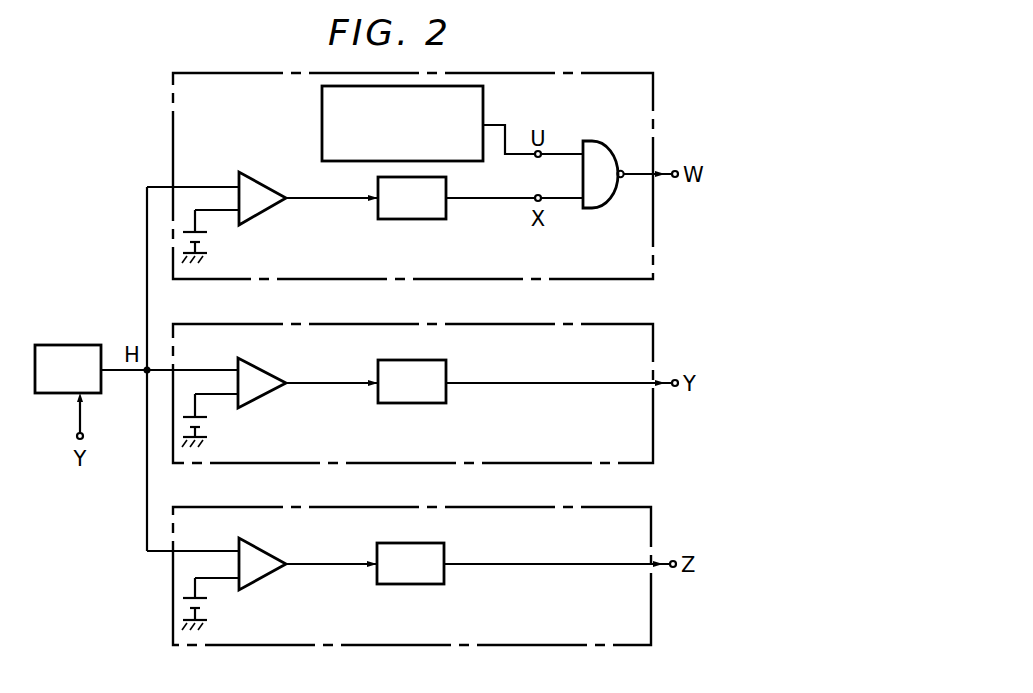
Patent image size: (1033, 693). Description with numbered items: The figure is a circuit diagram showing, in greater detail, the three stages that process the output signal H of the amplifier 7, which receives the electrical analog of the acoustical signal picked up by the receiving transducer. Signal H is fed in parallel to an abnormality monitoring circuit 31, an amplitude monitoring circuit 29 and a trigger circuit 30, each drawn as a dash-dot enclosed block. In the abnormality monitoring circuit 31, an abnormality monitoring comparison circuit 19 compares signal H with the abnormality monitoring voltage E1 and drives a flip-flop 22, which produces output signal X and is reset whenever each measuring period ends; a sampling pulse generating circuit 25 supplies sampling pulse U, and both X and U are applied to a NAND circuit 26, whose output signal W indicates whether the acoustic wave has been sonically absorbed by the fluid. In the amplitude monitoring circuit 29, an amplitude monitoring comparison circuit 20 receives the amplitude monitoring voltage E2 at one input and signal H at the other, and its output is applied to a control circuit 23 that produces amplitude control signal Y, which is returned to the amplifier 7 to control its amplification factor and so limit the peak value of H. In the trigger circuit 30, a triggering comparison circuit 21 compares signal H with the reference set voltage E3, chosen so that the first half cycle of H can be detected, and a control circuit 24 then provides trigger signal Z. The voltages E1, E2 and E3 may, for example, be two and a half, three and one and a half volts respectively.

The amplifier 7 is at (72, 345).
The abnormality monitoring comparison circuit 19 is at (257, 187).
The amplitude monitoring comparison circuit 20 is at (268, 376).
The triggering comparison circuit 21 is at (266, 558).
The flip-flop 22 is at (430, 219).
The control circuit 23 is at (411, 395).
The control circuit 24 is at (415, 573).
The sampling pulse generating circuit 25 is at (322, 133).
The NAND circuit 26 is at (598, 192).
The amplitude monitoring circuit 29 is at (646, 343).
The trigger circuit 30 is at (641, 531).
The abnormality monitoring circuit 31 is at (653, 106).
The abnormality monitoring voltage E1 is at (207, 247).
The amplitude monitoring voltage E2 is at (207, 432).
The set voltage E3 is at (207, 614).